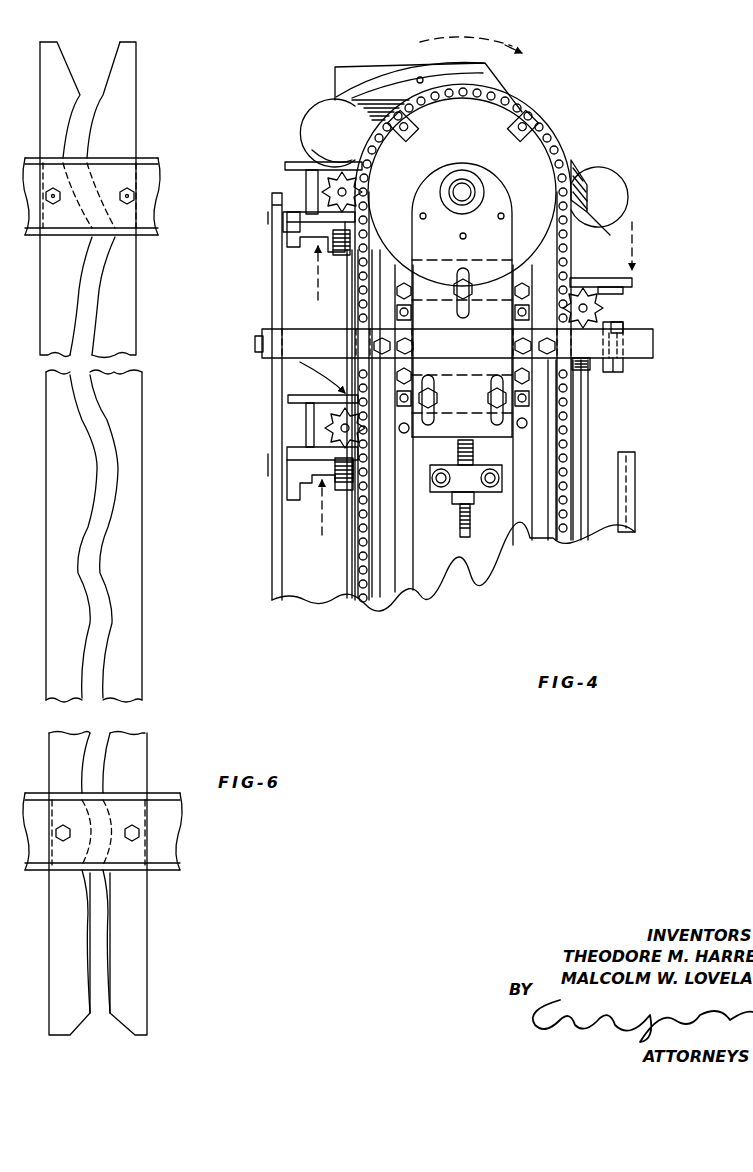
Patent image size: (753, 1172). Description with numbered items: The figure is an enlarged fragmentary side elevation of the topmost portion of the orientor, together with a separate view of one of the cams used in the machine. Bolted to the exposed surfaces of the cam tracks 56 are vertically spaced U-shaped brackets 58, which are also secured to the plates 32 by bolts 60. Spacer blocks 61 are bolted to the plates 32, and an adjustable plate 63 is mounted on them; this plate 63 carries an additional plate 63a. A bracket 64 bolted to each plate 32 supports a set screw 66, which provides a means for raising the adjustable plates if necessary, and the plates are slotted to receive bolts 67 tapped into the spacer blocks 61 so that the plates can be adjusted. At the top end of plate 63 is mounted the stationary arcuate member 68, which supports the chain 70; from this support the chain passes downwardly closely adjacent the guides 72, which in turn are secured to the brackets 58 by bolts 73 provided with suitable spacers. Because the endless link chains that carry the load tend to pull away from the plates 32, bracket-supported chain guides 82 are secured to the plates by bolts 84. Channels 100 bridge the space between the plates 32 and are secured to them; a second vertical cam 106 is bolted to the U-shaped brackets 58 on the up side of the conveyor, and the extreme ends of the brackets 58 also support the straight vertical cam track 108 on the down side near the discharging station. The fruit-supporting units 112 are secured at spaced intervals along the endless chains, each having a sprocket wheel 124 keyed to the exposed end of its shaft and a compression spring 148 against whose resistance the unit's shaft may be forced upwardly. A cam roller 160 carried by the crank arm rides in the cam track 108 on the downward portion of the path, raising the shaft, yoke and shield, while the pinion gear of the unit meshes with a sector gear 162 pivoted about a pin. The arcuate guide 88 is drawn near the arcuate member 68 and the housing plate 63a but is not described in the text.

In FIG. 4, the plates 32 is at (496, 555).
In FIG. 4, the cam tracks 56 is at (347, 567).
In FIG. 4, the U-shaped brackets 58 is at (263, 342).
In FIG. 4, the bolts 60 is at (257, 352).
In FIG. 4, the spacer blocks 61 is at (428, 266).
In FIG. 4, the plate 63 is at (496, 190).
In FIG. 4, the additional plate 63a is at (346, 72).
In FIG. 4, the bracket 64 is at (490, 492).
In FIG. 4, the set screw 66 is at (460, 530).
In FIG. 4, the bolts 67 is at (466, 285).
In FIG. 4, the stationary arcuate member 68 is at (469, 143).
In FIG. 4, the chain 70 is at (552, 148).
In FIG. 4, the guides 72 is at (380, 596).
In FIG. 4, the bolts 73 is at (374, 346).
In FIG. 4, the chain guides 82 is at (413, 585).
In FIG. 4, the bolts 84 is at (518, 306).
In FIG. 4, the guide 88 is at (370, 88).
In FIG. 6, the channels 100 is at (152, 156).
In FIG. 4, the second vertical cam 106 is at (272, 280).
In FIG. 4, the straight vertical cam track 108 is at (628, 464).
In FIG. 4, the fruit-supporting units 112 is at (292, 160).
In FIG. 4, the sprocket wheel 124 is at (325, 190).
In FIG. 4, the compression spring 148 is at (345, 482).
In FIG. 4, the cam roller 160 is at (620, 328).
In FIG. 4, the sector gear 162 is at (296, 470).